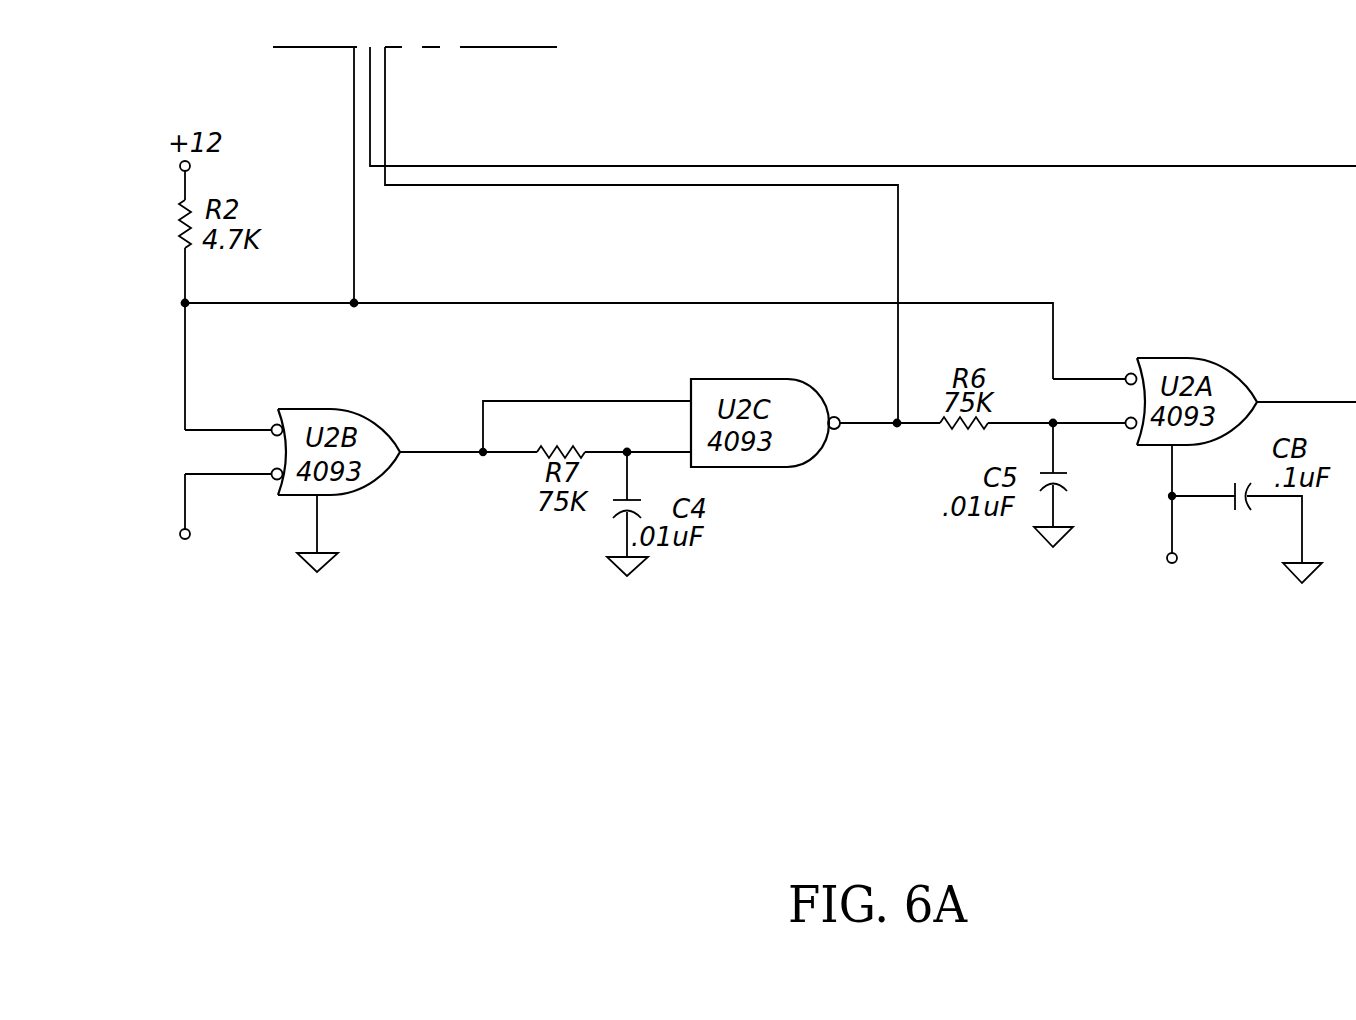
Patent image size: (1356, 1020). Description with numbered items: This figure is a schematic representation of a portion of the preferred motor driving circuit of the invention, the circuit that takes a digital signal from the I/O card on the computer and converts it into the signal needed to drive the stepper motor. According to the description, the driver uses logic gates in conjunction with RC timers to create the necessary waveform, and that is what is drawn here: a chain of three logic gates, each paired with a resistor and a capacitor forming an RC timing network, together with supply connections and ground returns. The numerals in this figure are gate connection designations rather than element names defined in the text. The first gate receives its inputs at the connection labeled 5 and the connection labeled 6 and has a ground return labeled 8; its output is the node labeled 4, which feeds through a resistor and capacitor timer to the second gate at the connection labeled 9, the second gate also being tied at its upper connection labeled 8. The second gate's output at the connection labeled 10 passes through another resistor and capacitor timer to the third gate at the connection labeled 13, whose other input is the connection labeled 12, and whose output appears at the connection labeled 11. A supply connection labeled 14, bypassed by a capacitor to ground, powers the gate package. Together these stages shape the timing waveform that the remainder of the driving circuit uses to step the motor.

The U2B output node / R7 input 4 is at (468, 440).
The U2B input pin 5 is at (234, 416).
The U2B input pin 6 is at (225, 507).
The U2B ground pin 8 / U2C input pin 8 is at (494, 471).
The U2C input pin 9 is at (659, 438).
The U2C output pin 10 is at (890, 409).
The U2A output pin 11 is at (1306, 387).
The U2A input pin 12 is at (1095, 368).
The U2A input pin 13 is at (1095, 411).
The U2A supply pin 14 is at (1185, 522).